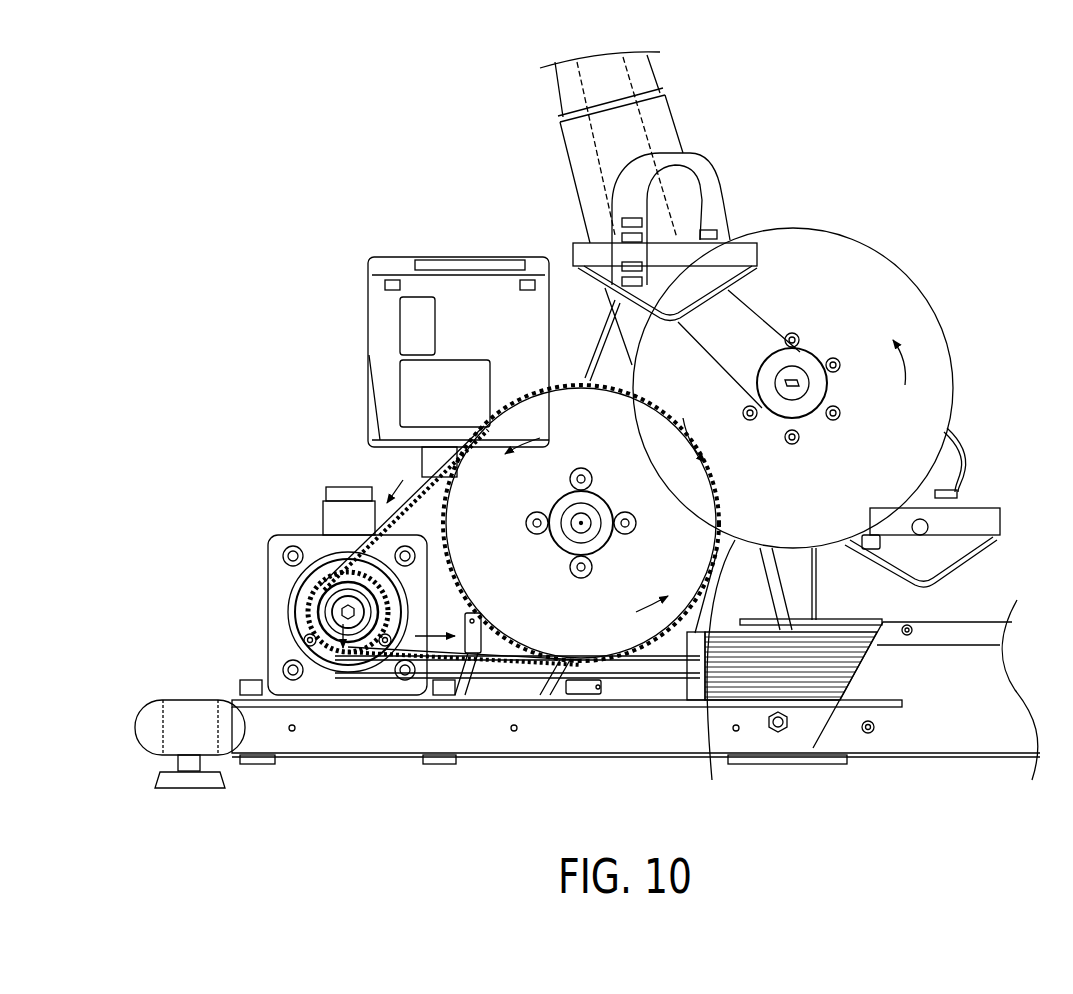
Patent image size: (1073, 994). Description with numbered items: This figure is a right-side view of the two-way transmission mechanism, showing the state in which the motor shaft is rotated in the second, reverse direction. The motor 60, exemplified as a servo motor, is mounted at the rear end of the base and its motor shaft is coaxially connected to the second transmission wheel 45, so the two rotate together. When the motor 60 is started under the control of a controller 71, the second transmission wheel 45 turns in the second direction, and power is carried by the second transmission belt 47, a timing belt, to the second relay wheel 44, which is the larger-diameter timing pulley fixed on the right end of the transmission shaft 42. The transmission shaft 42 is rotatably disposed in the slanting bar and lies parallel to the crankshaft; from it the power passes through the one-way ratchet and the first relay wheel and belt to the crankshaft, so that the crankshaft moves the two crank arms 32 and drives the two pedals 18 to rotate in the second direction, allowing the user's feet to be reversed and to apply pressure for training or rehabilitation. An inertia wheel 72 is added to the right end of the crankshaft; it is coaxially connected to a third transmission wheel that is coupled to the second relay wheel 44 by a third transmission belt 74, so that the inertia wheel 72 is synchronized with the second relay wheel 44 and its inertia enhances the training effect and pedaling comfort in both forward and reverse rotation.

The pedal 18 is at (705, 262).
The crank arm 32 is at (740, 322).
The transmission shaft 42 is at (580, 525).
The second relay wheel 44 is at (578, 620).
The second transmission wheel 45 is at (342, 642).
The second transmission belt 47 is at (423, 482).
The motor 60 is at (264, 528).
The controller 71 is at (388, 240).
The inertia wheel 72 is at (882, 277).
The third transmission belt 74 is at (726, 640).